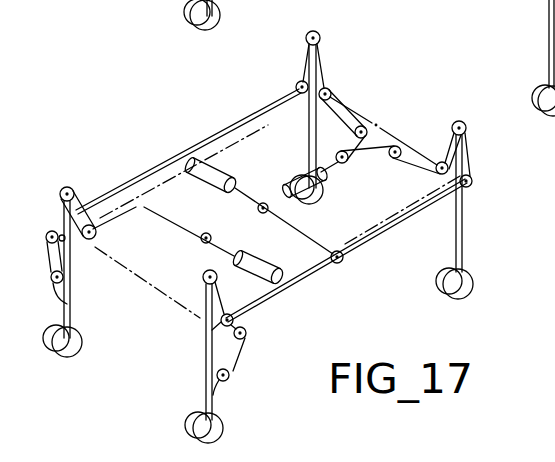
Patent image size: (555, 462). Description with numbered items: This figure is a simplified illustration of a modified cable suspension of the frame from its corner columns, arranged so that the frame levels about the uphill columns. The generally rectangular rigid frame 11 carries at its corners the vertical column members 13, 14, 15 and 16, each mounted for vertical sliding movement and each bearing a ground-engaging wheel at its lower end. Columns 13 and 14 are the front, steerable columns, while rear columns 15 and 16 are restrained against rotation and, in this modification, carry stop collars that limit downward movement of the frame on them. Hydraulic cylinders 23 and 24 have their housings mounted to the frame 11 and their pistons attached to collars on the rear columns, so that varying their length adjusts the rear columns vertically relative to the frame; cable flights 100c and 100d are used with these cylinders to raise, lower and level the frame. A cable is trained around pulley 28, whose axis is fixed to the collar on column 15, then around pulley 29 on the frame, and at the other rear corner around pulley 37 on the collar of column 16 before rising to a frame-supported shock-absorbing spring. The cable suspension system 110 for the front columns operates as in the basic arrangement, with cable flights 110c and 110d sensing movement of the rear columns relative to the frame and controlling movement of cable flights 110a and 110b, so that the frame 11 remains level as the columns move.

The rigid frame 11 is at (165, 307).
The vertical column member 13 is at (311, 149).
The vertical column member 14 is at (463, 238).
The vertical column member 15 is at (210, 377).
The vertical column member 16 is at (68, 306).
The hydraulic cylinder 23 is at (214, 175).
The hydraulic cylinder 24 is at (263, 275).
The pulley 28 is at (229, 380).
The pulley 29 is at (247, 330).
The pulley 37 is at (70, 312).
The cable suspension system 110 is at (404, 233).
The cable flight 110a is at (306, 62).
The cable flight 110b is at (467, 152).
The cable flight 110c is at (214, 350).
The cable flight 110d is at (63, 238).
The cable flight 100c is at (210, 297).
The cable flight 100d is at (84, 206).